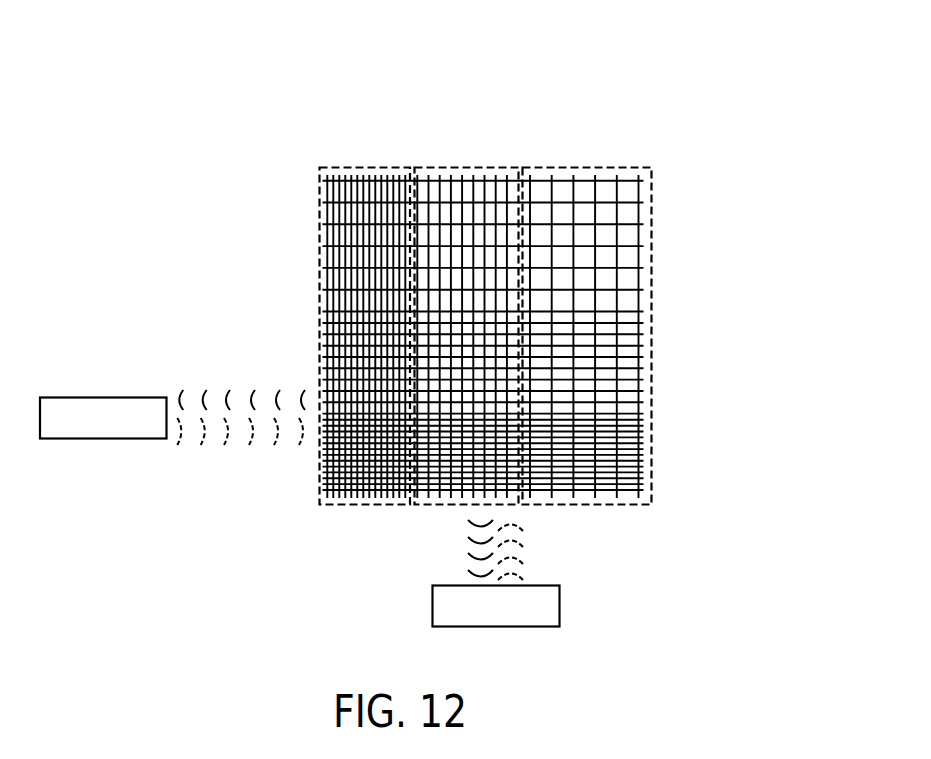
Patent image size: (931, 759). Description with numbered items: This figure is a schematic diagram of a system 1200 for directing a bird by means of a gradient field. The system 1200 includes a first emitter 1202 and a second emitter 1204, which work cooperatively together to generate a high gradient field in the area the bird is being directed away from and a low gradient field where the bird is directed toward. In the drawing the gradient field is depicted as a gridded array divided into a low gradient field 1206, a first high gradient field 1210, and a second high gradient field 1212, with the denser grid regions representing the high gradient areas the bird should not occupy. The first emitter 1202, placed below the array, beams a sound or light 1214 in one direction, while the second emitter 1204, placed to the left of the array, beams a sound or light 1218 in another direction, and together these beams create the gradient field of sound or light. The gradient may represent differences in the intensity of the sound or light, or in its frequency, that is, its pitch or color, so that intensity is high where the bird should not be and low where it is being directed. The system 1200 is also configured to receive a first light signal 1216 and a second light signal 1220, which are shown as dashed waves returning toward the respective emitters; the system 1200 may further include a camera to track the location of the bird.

The system 1200 is at (662, 76).
The first emitter 1202 is at (559, 600).
The second emitter 1204 is at (105, 438).
The low gradient field 1206 is at (640, 193).
The first high gradient field 1210 is at (642, 452).
The second high gradient field 1212 is at (323, 238).
The sound or light beam 1214 is at (475, 545).
The first light signal 1216 is at (520, 537).
The sound or light beam 1218 is at (228, 392).
The second light signal 1220 is at (232, 442).